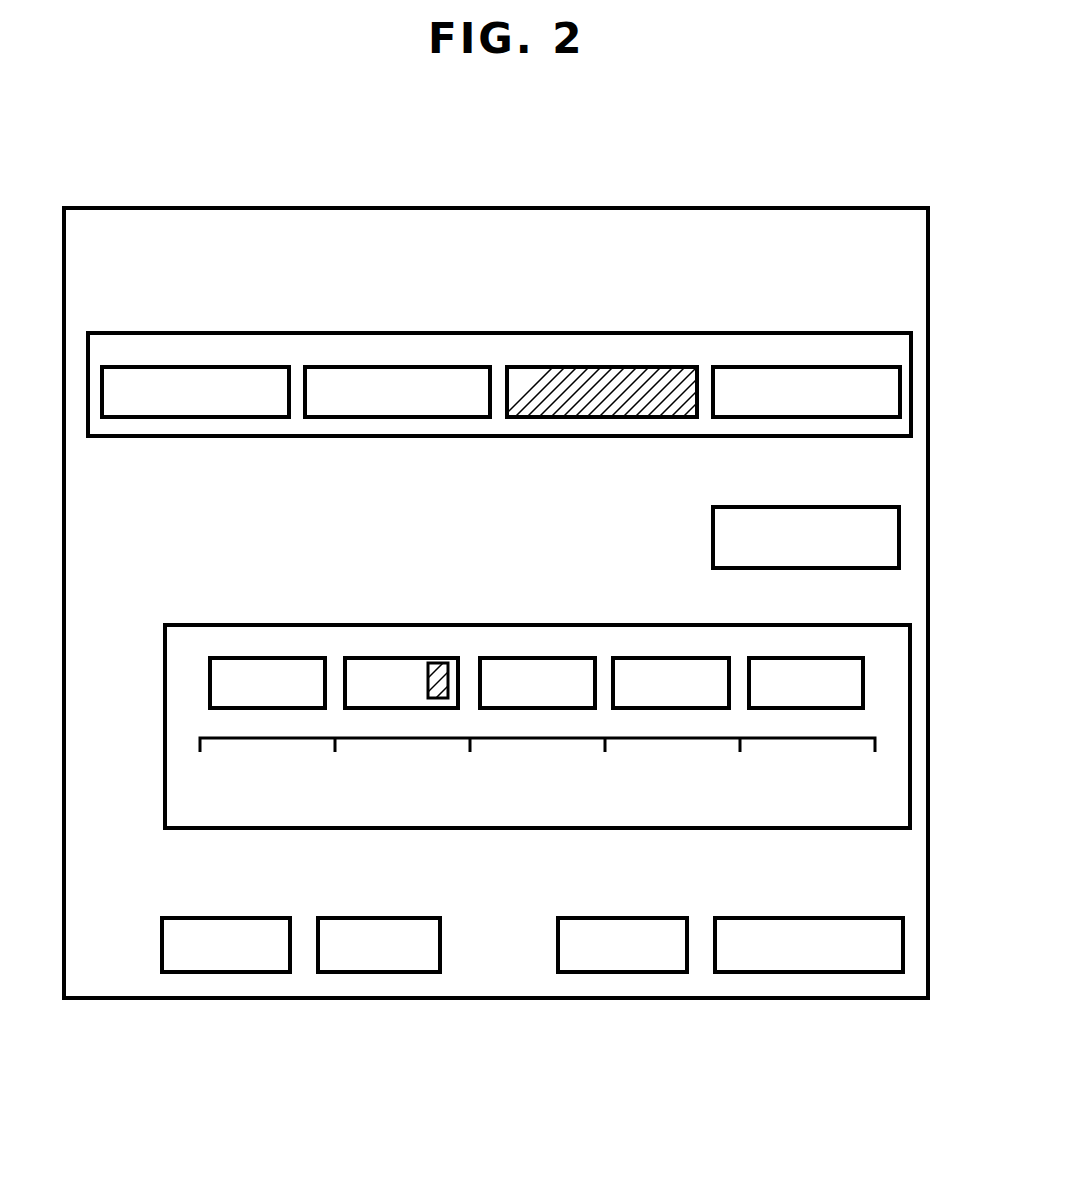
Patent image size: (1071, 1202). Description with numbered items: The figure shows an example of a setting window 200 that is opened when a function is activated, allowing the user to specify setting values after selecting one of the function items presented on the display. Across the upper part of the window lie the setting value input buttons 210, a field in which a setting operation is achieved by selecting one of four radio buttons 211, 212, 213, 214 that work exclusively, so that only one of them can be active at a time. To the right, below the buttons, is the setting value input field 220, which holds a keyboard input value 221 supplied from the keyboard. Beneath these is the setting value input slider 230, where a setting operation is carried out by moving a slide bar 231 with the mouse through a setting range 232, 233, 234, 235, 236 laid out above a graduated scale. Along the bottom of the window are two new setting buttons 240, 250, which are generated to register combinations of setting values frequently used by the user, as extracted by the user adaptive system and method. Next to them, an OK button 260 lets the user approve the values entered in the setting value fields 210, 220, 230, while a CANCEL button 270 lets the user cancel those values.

The setting window 200 is at (738, 208).
The setting value input buttons 210 is at (220, 436).
The radio button 211 is at (238, 367).
The radio button 212 is at (430, 367).
The radio button 213 is at (648, 367).
The radio button 214 is at (826, 367).
The setting value input field 220 is at (713, 535).
The keyboard input value 221 is at (812, 520).
The setting value input slider 230 is at (165, 712).
The slide bar 231 is at (438, 663).
The setting range 232 is at (235, 658).
The setting range 233 is at (373, 658).
The setting range 234 is at (558, 658).
The setting range 235 is at (685, 658).
The setting range 236 is at (830, 658).
The new setting button 240 is at (230, 972).
The new setting button 250 is at (385, 972).
The OK button 260 is at (630, 972).
The CANCEL button 270 is at (818, 972).